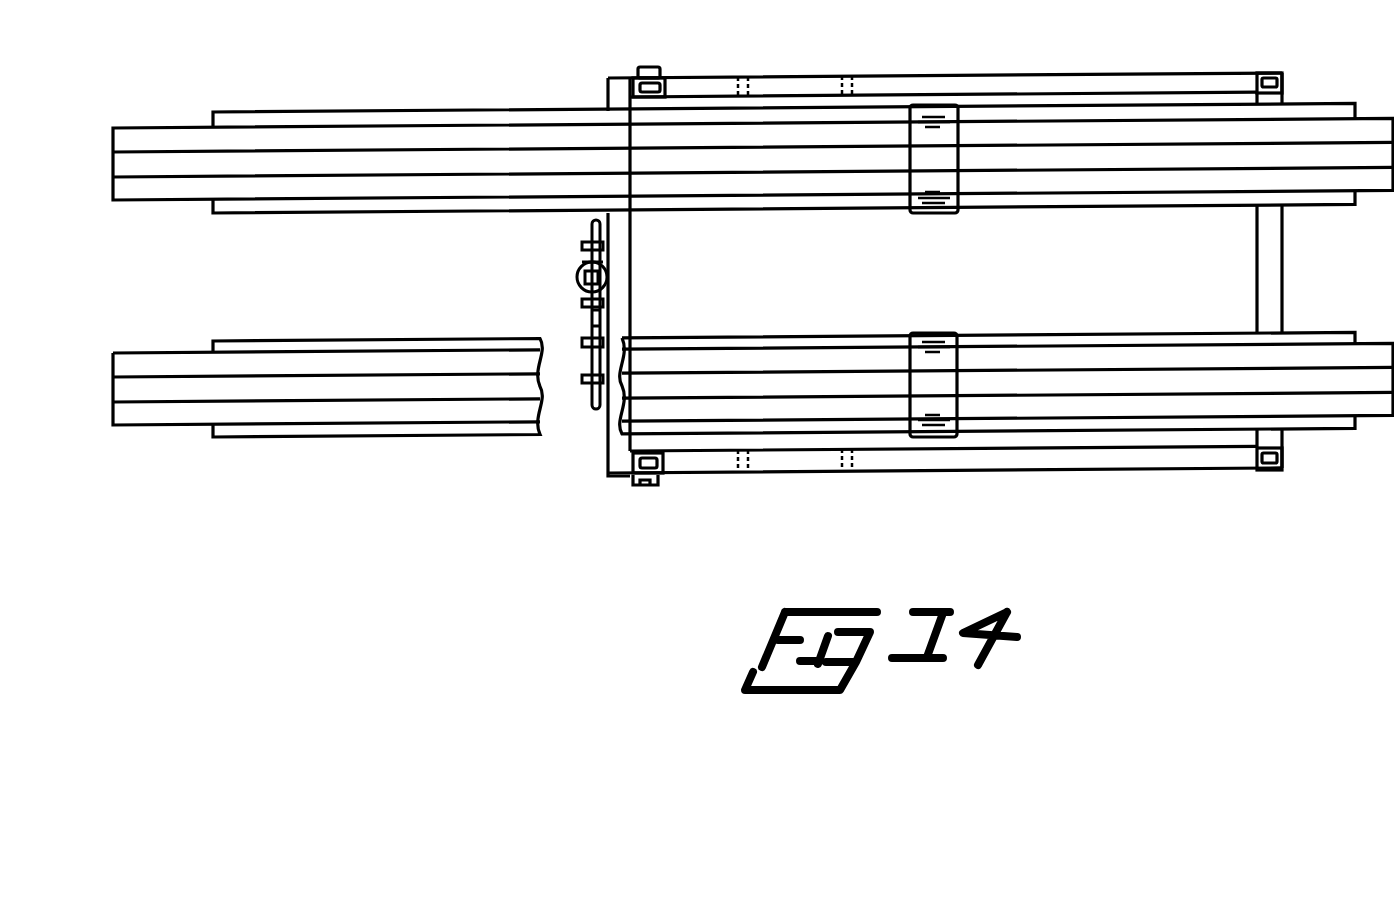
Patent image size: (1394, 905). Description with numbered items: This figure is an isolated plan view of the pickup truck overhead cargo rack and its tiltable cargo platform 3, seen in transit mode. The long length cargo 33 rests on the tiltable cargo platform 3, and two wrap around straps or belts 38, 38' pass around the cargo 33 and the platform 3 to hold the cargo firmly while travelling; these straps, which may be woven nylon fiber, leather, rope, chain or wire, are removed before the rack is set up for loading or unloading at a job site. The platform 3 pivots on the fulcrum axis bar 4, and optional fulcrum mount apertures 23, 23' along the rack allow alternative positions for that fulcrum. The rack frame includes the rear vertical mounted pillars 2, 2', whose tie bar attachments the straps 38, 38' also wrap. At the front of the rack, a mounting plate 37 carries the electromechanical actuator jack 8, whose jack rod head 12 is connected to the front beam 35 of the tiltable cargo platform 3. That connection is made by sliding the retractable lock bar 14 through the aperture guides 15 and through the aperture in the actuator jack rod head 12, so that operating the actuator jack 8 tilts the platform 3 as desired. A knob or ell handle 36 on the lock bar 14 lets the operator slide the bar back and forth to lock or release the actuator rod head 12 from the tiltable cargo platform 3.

The rear vertical mounted pillar 2 is at (1255, 480).
The rear vertical mounted pillar 2' is at (1241, 62).
The tiltable cargo platform 3 is at (322, 115).
The fulcrum axis bar 4 is at (633, 84).
The electromechanical actuator jack 8 is at (578, 277).
The electromechanical actuator jack rod head 12 is at (598, 273).
The retractable lock bar 14 is at (603, 318).
The aperture guides 15 is at (583, 245).
The optional fulcrum mount aperture 23 is at (773, 275).
The optional fulcrum mount aperture 23' is at (879, 275).
The long length cargo 33 is at (860, 183).
The front beam of cargo tilt rack 35 is at (632, 238).
The knob or ell handle 36 is at (593, 408).
The mounting plate 37 is at (588, 262).
The wrap around strap or belt 38 is at (961, 367).
The wrap around strap or belt 38' is at (965, 124).